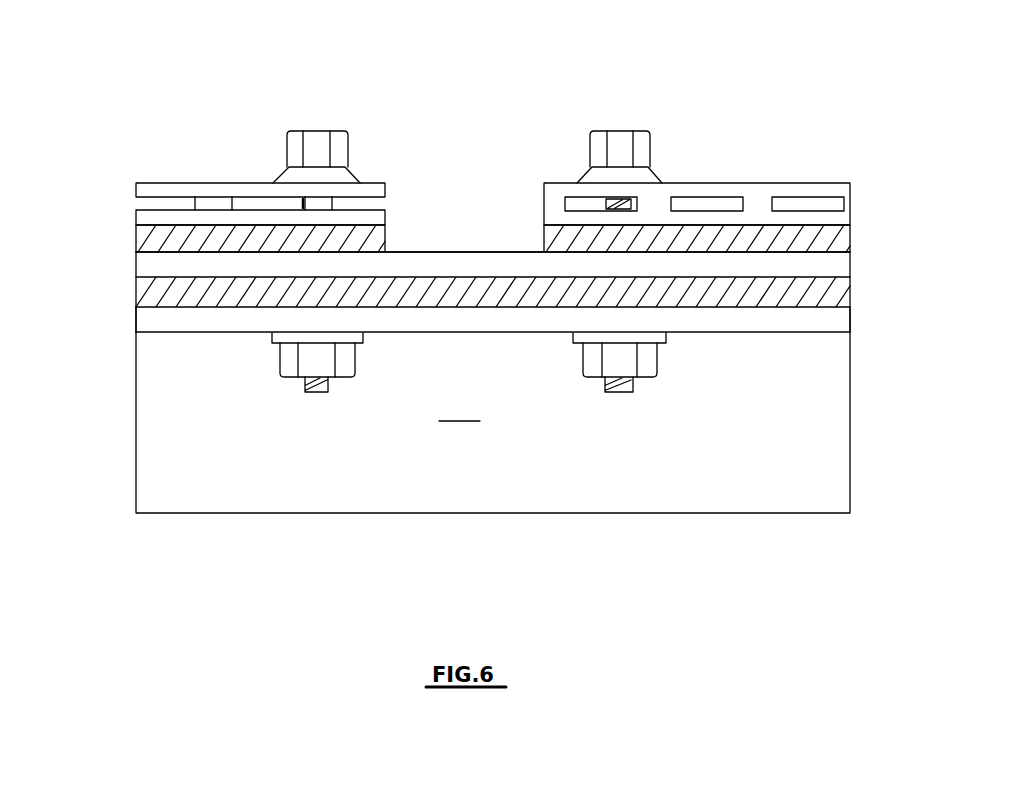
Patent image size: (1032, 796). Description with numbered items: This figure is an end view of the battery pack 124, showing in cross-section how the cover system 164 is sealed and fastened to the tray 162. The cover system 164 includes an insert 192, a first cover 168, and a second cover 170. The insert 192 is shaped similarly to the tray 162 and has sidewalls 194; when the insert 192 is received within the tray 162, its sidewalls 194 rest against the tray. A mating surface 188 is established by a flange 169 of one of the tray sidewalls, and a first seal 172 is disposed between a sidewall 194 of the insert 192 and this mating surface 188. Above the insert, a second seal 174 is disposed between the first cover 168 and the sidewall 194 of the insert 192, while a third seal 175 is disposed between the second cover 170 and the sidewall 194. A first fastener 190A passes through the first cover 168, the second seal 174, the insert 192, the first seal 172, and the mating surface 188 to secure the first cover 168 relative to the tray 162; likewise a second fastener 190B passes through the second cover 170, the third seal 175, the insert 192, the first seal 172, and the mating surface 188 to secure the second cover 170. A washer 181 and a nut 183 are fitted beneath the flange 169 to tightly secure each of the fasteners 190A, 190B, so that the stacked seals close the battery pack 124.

The battery pack 124 is at (797, 80).
The tray 162 is at (474, 490).
The cover system 164 is at (100, 218).
The first cover 168 is at (226, 180).
The flange 169 is at (388, 336).
The second cover 170 is at (774, 180).
The first seal 172 is at (722, 293).
The second seal 174 is at (153, 237).
The third seal 175 is at (813, 238).
The washer 181 is at (275, 342).
The nut 183 is at (293, 368).
The mating surface 188 is at (495, 322).
The first fastener 190A is at (323, 128).
The second fastener 190B is at (625, 128).
The insert 192 is at (511, 249).
The sidewalls 194 is at (459, 410).